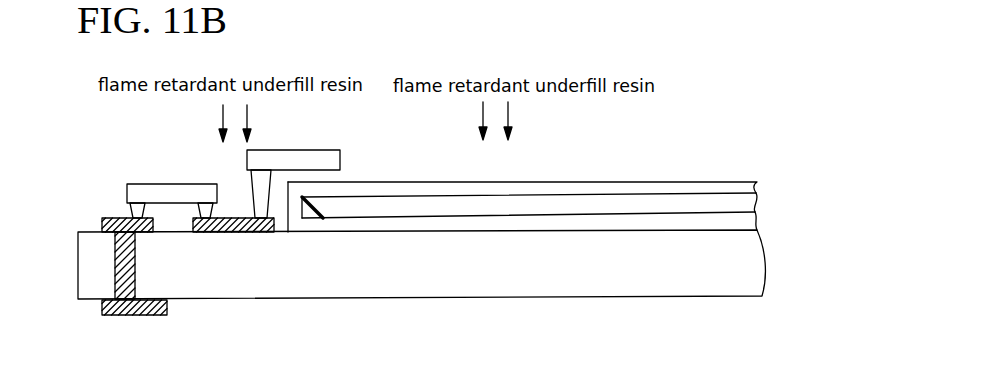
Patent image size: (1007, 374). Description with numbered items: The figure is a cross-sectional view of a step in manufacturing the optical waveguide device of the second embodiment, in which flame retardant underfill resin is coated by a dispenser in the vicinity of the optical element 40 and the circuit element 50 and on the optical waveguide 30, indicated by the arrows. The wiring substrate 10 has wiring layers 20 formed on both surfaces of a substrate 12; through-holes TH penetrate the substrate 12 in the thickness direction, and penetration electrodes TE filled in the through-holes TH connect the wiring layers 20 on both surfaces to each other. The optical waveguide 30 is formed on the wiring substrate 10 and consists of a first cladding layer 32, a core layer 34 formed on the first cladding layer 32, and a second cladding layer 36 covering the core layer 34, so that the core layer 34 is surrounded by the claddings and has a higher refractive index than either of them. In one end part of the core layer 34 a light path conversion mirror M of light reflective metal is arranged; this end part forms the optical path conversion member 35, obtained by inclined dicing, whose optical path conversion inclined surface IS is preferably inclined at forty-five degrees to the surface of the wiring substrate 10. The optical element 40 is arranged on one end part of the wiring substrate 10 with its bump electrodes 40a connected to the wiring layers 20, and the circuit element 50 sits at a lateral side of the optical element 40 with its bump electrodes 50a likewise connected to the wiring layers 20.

The wiring substrate 10 is at (766, 232).
The substrate 12 is at (718, 287).
The wiring layers 20 is at (102, 227).
The through-holes TH is at (115, 253).
The penetration electrodes TE is at (125, 283).
The optical waveguide 30 is at (566, 203).
The first cladding layer 32 is at (752, 214).
The core layer 34 is at (752, 197).
The second cladding layer 36 is at (755, 184).
The optical path conversion member 35 is at (312, 204).
The light path conversion mirror M is at (312, 204).
The optical path conversion inclined surface IS is at (308, 207).
The optical element 40 is at (288, 158).
The bump electrodes 40a is at (263, 177).
The circuit element 50 is at (162, 192).
The bump electrodes 50a is at (138, 212).